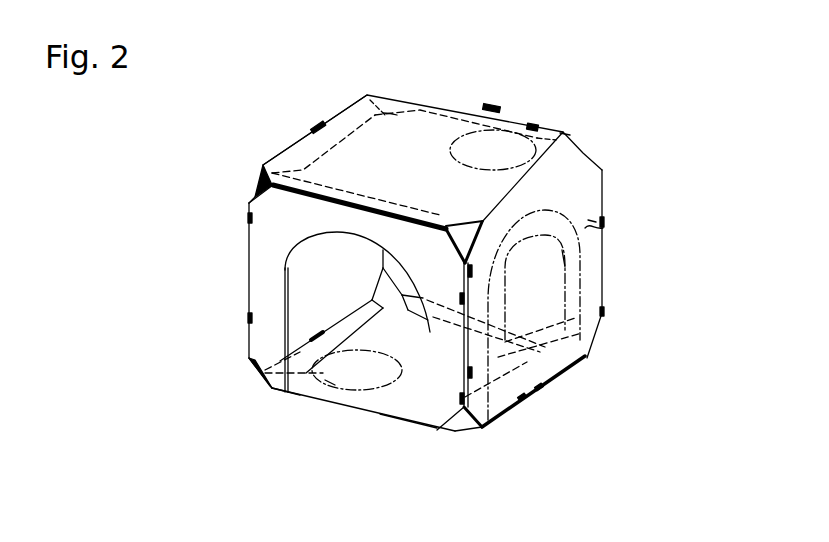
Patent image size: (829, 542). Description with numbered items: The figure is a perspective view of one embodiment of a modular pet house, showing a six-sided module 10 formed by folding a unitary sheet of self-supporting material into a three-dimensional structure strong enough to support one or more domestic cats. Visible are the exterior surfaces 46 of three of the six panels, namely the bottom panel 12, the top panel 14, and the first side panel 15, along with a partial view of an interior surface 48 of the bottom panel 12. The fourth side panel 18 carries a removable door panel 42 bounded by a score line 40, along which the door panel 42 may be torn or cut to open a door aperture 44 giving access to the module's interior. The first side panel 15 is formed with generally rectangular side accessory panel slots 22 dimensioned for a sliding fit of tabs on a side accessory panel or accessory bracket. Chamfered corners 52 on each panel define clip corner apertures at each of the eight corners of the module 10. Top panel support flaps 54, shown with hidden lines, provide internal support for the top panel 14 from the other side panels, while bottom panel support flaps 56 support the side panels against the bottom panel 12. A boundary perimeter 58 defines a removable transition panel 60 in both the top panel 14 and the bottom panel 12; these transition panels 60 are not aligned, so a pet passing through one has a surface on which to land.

The six-sided module 10 is at (614, 49).
The bottom panel 12 is at (420, 415).
The top panel 14 is at (410, 169).
The first side panel 15 is at (603, 175).
The fourth side panel 18 is at (258, 257).
The side accessory panel slots 22 is at (461, 400).
The score line 40 is at (563, 250).
The removable door panel 42 is at (568, 300).
The door aperture 44 is at (323, 263).
The exterior surfaces 46 is at (397, 115).
The interior surface 48 is at (412, 402).
The chamfered corners 52 is at (460, 224).
The top panel support flaps 54 is at (353, 135).
The bottom panel support flaps 56 is at (353, 319).
The boundary perimeter 58 is at (568, 133).
The removable transition panel 60 is at (508, 166).